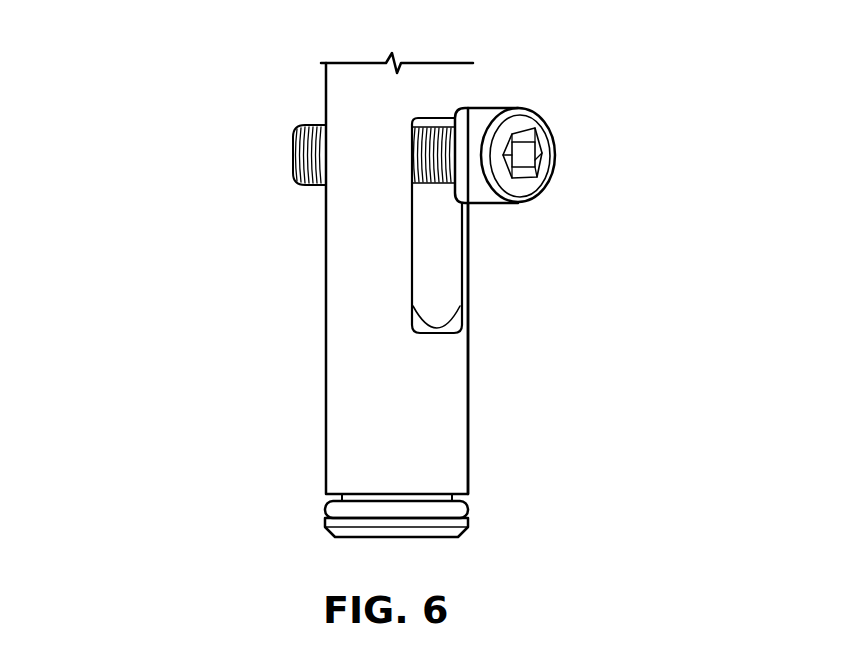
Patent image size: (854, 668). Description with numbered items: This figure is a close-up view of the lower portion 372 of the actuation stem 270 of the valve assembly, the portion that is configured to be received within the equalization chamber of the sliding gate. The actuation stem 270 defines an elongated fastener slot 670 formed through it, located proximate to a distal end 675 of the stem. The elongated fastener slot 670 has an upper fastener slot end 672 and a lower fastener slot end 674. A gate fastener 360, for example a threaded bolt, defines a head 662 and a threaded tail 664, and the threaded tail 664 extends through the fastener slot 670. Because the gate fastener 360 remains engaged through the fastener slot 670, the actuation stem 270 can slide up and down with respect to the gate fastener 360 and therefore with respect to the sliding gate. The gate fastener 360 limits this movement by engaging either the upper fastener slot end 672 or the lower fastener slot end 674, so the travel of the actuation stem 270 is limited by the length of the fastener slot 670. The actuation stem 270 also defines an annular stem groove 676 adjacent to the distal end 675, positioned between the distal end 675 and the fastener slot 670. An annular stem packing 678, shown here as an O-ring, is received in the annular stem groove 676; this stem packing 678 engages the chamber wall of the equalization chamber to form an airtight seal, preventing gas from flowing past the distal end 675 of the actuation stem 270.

The actuation stem 270 is at (370, 298).
The gate fastener 360 is at (546, 112).
The lower portion 372 is at (352, 325).
The head 662 is at (528, 183).
The threaded tail 664 is at (305, 153).
The elongated fastener slot 670 is at (433, 262).
The upper fastener slot end 672 is at (437, 118).
The lower fastener slot end 674 is at (442, 327).
The distal end 675 is at (427, 537).
The annular stem groove 676 is at (322, 500).
The annular stem packing 678 is at (450, 509).